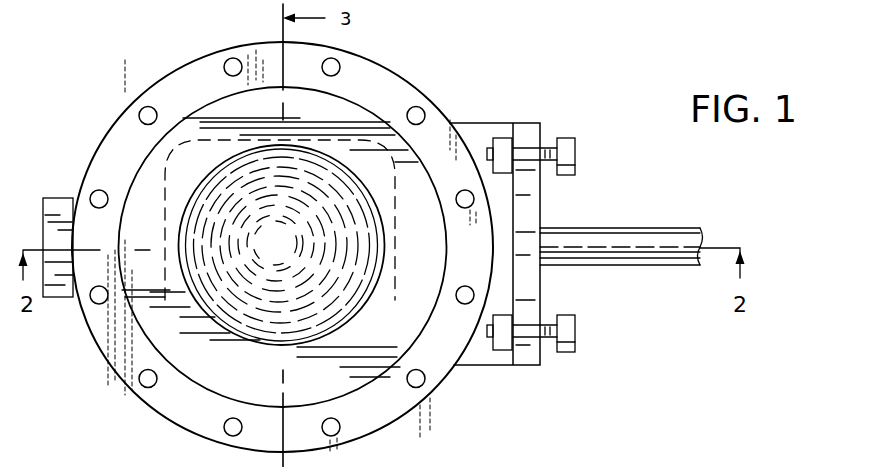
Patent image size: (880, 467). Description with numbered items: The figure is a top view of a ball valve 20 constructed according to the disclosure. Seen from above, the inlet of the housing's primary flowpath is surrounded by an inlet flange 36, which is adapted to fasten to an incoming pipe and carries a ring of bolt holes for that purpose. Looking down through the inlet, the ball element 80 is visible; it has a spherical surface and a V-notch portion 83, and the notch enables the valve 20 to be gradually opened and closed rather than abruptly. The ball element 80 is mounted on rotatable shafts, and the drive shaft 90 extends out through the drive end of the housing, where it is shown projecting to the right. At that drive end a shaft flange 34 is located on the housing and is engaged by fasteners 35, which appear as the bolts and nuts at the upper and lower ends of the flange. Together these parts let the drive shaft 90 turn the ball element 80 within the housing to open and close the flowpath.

The ball valve 20 is at (458, 50).
The inlet flange 36 is at (103, 337).
The V-notch portion 83 is at (313, 140).
The ball element 80 is at (280, 293).
The shaft flange 34 is at (540, 198).
The fasteners 35 is at (575, 152).
The drive shaft 90 is at (668, 227).